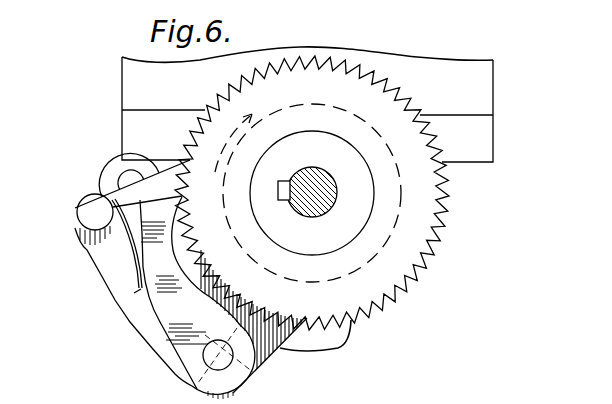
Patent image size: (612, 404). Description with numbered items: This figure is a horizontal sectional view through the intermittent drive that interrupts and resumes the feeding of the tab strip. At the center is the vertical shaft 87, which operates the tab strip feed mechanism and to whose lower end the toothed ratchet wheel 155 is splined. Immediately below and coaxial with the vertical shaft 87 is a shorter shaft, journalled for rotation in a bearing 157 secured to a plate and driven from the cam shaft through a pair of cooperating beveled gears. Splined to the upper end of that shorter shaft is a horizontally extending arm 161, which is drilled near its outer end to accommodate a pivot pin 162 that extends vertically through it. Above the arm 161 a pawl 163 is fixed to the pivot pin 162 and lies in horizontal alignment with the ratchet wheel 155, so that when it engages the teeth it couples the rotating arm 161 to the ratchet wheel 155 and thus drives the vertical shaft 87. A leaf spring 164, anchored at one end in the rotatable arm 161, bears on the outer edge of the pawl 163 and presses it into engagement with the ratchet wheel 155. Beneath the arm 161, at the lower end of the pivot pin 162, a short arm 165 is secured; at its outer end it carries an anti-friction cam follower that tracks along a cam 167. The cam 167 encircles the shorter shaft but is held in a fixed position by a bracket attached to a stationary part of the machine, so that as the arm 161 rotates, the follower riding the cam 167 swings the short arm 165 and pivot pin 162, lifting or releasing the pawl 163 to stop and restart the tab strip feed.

The vertical shaft 87 is at (312, 168).
The toothed ratchet wheel 155 is at (433, 207).
The bearing 157 is at (478, 137).
The arm 161 is at (113, 285).
The pivot pin 162 is at (203, 353).
The pawl 163 is at (165, 310).
The leaf spring 164 is at (92, 258).
The short arm 165 is at (103, 183).
The cam 167 is at (318, 340).